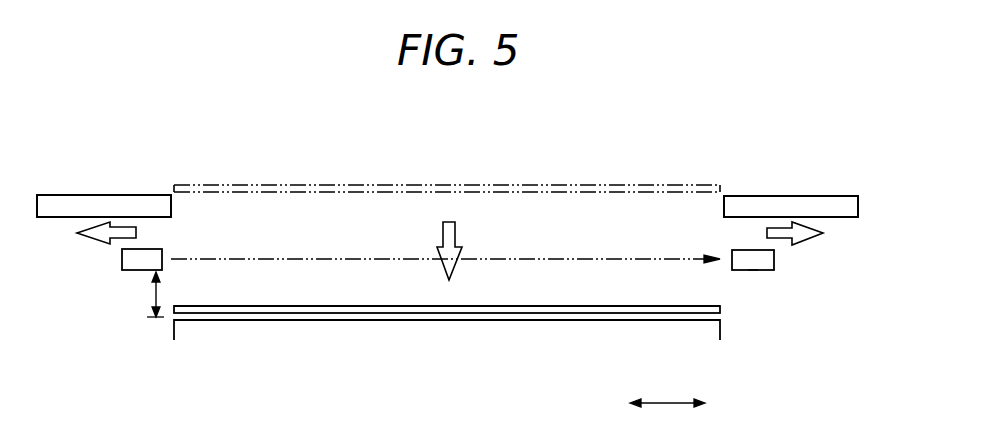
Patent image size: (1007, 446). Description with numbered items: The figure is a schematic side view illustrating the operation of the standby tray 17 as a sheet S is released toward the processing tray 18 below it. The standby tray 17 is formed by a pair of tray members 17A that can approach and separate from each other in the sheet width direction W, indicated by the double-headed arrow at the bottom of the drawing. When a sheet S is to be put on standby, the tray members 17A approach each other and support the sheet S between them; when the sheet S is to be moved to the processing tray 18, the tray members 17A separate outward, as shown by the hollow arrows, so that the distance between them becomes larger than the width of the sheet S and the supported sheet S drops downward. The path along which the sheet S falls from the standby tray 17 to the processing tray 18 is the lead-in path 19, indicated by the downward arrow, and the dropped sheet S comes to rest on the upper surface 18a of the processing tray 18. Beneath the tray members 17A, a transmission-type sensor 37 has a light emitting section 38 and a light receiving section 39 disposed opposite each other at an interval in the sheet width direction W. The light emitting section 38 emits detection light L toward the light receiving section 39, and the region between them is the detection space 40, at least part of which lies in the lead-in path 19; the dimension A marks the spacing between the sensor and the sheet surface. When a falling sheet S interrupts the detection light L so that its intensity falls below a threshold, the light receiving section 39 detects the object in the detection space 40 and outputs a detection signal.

The standby tray 17 is at (808, 193).
The tray member 17A is at (105, 195).
The sheet S is at (452, 185).
The lead-in path 19 is at (456, 233).
The detection light L is at (548, 260).
The light emitting section 38 is at (135, 270).
The sensor 37 is at (788, 258).
The light receiving section 39 is at (757, 271).
The detection space 40 is at (335, 271).
The upper surface of tray 18a is at (686, 318).
The processing tray 18 is at (722, 328).
The distance A is at (162, 294).
The sheet width direction W is at (667, 414).